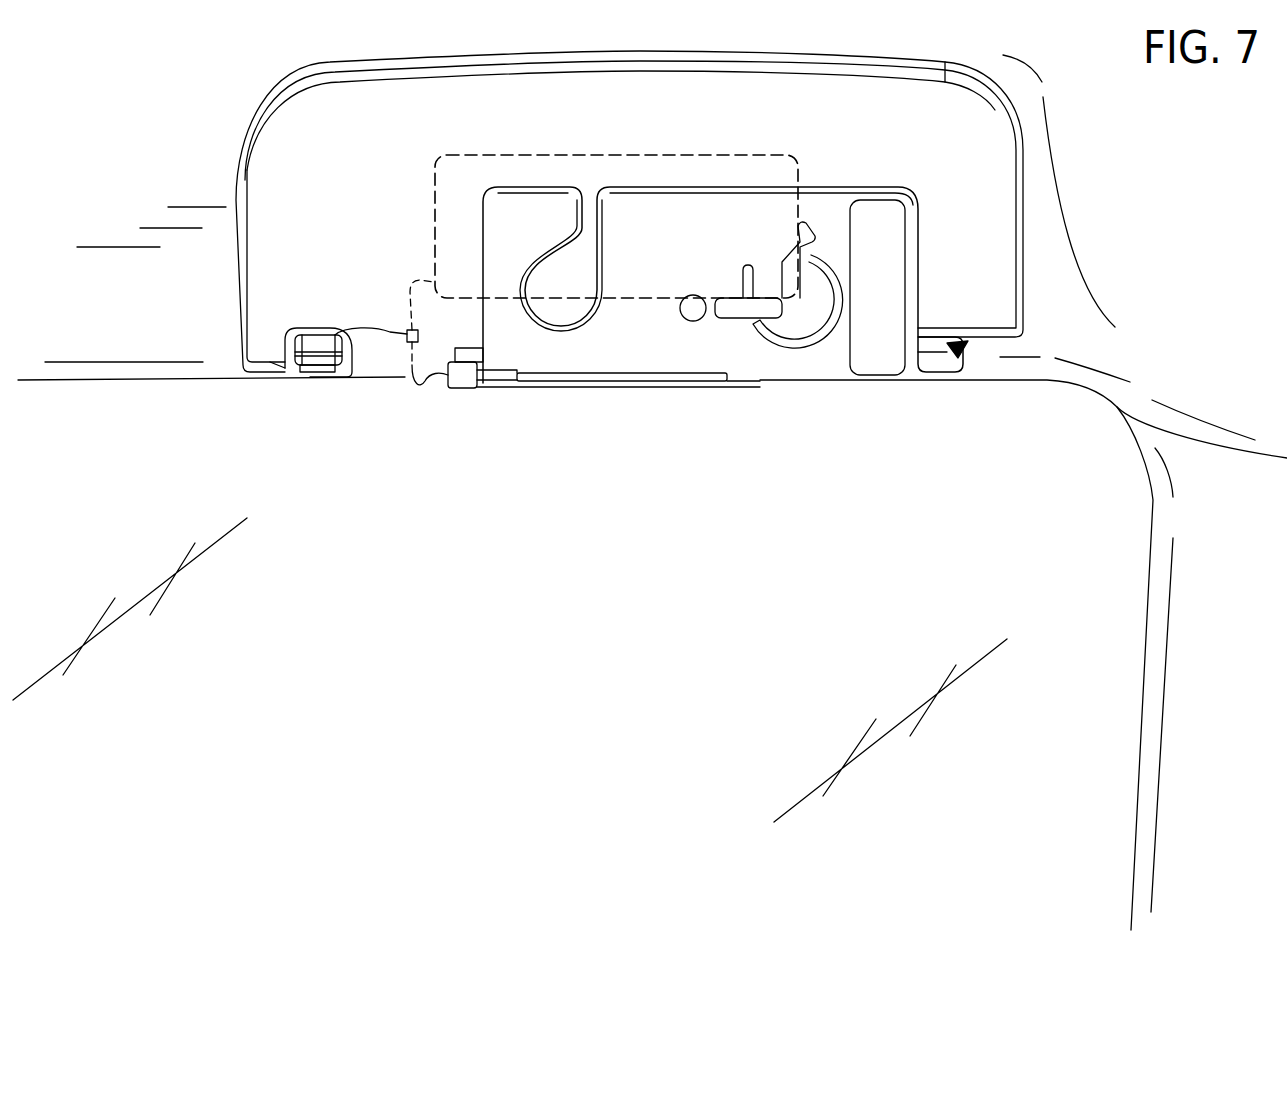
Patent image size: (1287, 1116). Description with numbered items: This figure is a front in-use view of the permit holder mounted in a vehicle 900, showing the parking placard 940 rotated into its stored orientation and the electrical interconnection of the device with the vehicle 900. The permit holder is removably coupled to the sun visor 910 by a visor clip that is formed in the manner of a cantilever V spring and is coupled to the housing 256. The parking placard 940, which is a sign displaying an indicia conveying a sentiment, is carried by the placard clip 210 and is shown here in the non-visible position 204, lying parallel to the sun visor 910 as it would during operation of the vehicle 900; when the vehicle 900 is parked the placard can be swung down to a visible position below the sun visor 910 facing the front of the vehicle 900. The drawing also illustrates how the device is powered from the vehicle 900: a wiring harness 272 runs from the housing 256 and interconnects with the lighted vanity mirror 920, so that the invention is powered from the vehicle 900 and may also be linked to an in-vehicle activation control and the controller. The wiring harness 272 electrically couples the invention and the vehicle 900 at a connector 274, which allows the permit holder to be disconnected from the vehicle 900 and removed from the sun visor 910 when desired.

The non-visible position 204 is at (888, 412).
The placard clip 210 is at (605, 390).
The housing 256 is at (463, 382).
The wiring harness 272 is at (407, 377).
The connector 274 is at (332, 329).
The vehicle 900 is at (1077, 328).
The sun visor 910 is at (298, 155).
The lighted vanity mirror 920 is at (505, 155).
The parking placard 940 is at (833, 358).